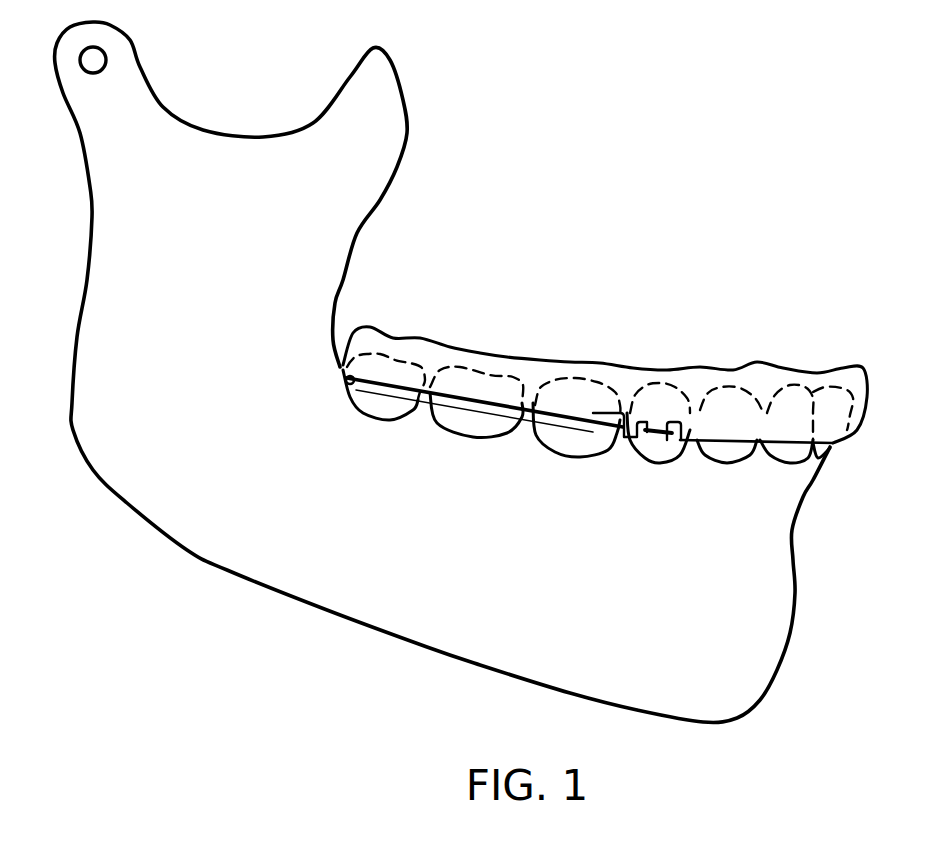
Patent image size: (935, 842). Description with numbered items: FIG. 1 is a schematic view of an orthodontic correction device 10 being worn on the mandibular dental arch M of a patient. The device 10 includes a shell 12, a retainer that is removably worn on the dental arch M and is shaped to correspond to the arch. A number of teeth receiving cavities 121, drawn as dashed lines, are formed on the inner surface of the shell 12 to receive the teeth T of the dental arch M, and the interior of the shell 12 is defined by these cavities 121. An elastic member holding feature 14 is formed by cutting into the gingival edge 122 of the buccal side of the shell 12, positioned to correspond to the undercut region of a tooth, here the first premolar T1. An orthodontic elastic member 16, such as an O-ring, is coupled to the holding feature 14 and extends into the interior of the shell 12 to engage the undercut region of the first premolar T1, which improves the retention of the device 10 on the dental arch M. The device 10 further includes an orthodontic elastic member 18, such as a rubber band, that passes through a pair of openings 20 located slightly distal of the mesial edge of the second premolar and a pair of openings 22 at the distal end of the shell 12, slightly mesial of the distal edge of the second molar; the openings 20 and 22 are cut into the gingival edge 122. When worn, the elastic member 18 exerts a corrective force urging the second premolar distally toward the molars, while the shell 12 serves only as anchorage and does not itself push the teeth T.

The orthodontic correction device 10 is at (483, 377).
The shell 12 is at (624, 381).
The teeth receiving cavities 121 is at (390, 362).
The gingival edge 122 is at (830, 451).
The elastic member holding feature 14 is at (673, 443).
The orthodontic elastic member 16 is at (662, 420).
The orthodontic elastic member 18 is at (543, 405).
The openings 20 is at (607, 433).
The openings 22 is at (340, 380).
The teeth T is at (380, 405).
The first premolar T1 is at (652, 452).
The dental arch M is at (795, 525).